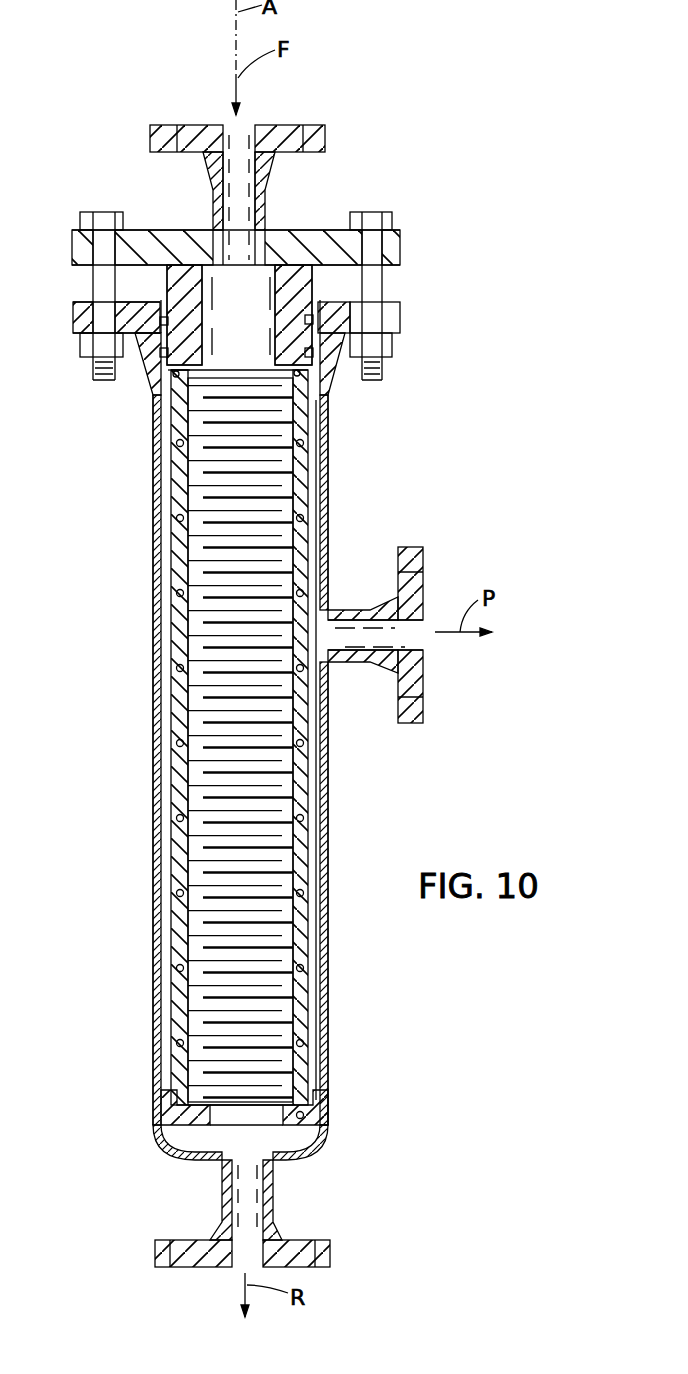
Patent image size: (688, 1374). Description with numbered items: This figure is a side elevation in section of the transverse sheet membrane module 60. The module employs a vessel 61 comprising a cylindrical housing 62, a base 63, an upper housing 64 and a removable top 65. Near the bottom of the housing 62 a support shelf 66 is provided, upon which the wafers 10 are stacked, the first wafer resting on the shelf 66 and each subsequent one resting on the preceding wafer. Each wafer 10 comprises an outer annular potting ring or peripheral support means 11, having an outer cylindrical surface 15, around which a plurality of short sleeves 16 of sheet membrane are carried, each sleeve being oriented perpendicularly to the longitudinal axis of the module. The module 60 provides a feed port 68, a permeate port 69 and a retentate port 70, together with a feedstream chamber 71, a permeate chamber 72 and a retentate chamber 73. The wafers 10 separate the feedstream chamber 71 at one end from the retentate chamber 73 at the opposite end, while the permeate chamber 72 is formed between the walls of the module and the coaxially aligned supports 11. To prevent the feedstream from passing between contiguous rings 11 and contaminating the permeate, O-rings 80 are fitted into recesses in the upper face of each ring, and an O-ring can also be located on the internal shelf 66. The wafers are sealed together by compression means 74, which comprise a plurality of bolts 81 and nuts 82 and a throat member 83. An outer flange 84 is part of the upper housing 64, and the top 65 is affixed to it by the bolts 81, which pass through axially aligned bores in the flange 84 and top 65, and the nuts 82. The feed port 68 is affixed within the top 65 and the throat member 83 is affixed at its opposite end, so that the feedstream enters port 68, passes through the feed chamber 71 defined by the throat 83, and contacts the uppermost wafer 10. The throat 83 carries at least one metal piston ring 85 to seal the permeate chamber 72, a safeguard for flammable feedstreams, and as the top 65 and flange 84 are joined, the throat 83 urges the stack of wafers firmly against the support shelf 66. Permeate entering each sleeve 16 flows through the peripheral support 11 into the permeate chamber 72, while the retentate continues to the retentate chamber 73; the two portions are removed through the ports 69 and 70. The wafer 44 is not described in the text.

The wafer 10 is at (160, 468).
The peripheral support means 11 is at (315, 1047).
The outer cylindrical surface 15 is at (172, 532).
The sheet membrane sleeve 16 is at (283, 565).
The gasket 44 is at (173, 375).
The module 60 is at (133, 646).
The vessel 61 is at (327, 1150).
The cylindrical housing 62 is at (330, 842).
The base 63 is at (300, 1167).
The upper housing 64 is at (340, 375).
The removable top 65 is at (138, 231).
The support shelf 66 is at (330, 1137).
The feed port 68 is at (320, 127).
The permeate port 69 is at (420, 548).
The retentate port 70 is at (333, 1250).
The feedstream chamber 71 is at (257, 282).
The permeate chamber 72 is at (317, 453).
The retentate chamber 73 is at (210, 1137).
The compression means 74 is at (418, 257).
The O-ring 80 is at (175, 372).
The bolt 81 is at (375, 217).
The nut 82 is at (393, 345).
The throat member 83 is at (308, 286).
The outer flange 84 is at (400, 315).
The metal piston ring 85 is at (160, 322).